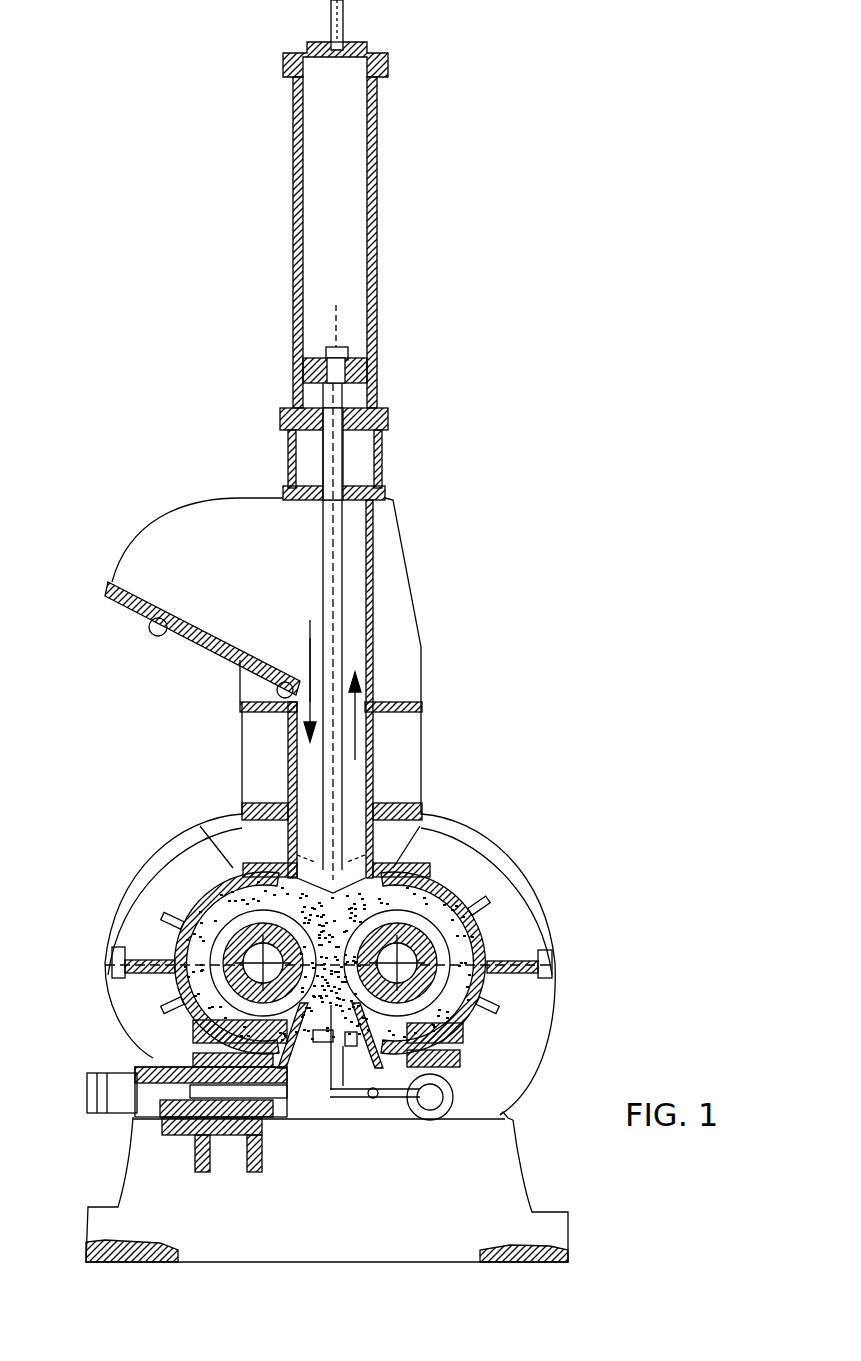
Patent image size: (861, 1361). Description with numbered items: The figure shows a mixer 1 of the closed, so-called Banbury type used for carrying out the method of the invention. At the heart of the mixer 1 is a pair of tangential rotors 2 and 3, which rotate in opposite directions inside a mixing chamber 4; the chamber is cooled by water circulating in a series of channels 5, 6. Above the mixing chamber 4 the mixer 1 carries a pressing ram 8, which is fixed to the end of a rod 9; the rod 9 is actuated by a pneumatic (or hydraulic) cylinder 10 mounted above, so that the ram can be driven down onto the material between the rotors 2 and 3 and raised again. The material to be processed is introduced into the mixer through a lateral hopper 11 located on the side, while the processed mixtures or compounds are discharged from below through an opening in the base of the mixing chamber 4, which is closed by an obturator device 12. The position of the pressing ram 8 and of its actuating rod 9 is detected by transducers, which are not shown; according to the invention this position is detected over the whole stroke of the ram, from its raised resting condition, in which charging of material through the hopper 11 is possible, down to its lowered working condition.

The mixer 1 is at (478, 560).
The tangential rotor 2 is at (220, 892).
The tangential rotor 3 is at (485, 950).
The mixing chamber 4 is at (490, 958).
The channel 5 is at (215, 872).
The channel 6 is at (190, 1058).
The pressing ram 8 is at (300, 808).
The rod 9 is at (338, 633).
The pneumatic cylinder 10 is at (380, 190).
The lateral hopper 11 is at (195, 547).
The obturator device 12 is at (465, 1033).